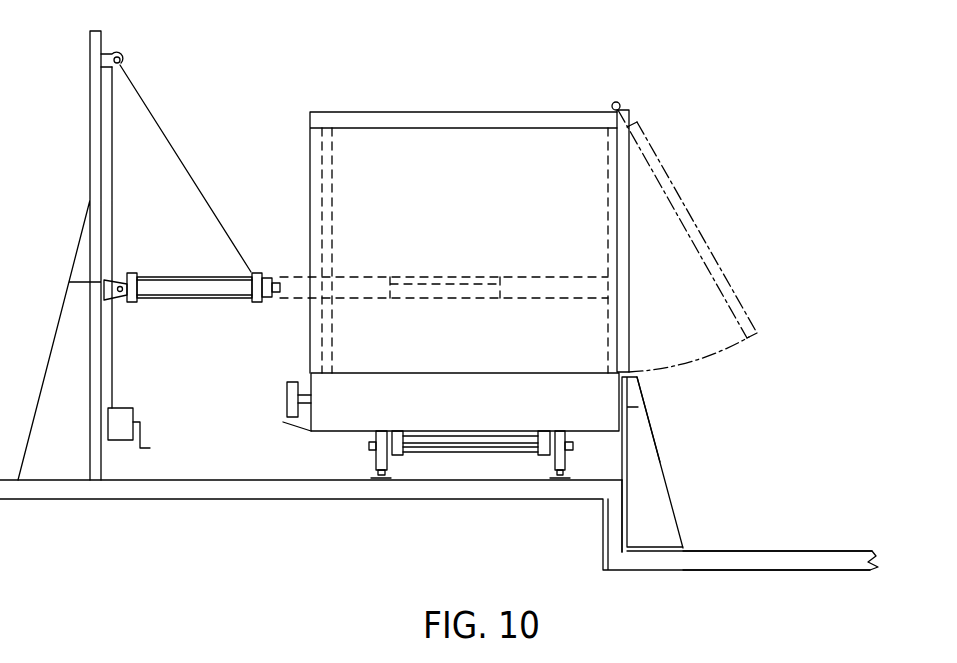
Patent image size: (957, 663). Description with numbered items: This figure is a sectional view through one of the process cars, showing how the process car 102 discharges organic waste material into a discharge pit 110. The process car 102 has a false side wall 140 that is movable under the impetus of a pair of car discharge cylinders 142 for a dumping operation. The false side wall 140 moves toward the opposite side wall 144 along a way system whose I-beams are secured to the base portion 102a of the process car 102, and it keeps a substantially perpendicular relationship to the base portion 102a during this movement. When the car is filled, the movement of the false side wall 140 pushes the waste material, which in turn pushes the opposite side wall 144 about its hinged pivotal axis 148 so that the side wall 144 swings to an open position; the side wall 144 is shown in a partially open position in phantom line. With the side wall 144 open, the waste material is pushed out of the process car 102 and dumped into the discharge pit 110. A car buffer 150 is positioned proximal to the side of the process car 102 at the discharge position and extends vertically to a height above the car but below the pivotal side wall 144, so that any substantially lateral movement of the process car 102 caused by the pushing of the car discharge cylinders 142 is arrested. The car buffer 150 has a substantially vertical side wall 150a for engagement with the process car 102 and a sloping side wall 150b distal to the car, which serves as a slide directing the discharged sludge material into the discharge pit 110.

The process car 102 is at (496, 102).
The base portion 102a is at (505, 413).
The discharge pit 110 is at (805, 548).
The false side wall 140 is at (320, 199).
The car discharge cylinders 142 is at (182, 300).
The side wall 144 is at (708, 243).
The hinged pivotal axis 148 is at (620, 103).
The car buffer 150 is at (652, 460).
The vertical side wall 150a is at (620, 455).
The sloping side wall 150b is at (653, 420).